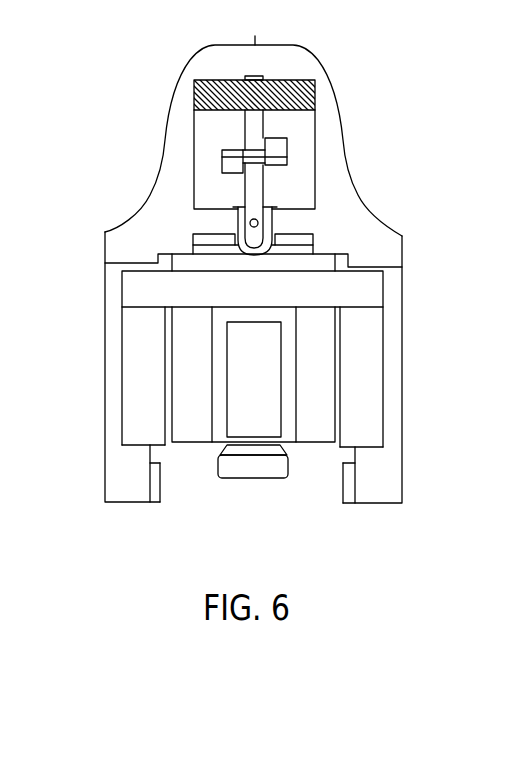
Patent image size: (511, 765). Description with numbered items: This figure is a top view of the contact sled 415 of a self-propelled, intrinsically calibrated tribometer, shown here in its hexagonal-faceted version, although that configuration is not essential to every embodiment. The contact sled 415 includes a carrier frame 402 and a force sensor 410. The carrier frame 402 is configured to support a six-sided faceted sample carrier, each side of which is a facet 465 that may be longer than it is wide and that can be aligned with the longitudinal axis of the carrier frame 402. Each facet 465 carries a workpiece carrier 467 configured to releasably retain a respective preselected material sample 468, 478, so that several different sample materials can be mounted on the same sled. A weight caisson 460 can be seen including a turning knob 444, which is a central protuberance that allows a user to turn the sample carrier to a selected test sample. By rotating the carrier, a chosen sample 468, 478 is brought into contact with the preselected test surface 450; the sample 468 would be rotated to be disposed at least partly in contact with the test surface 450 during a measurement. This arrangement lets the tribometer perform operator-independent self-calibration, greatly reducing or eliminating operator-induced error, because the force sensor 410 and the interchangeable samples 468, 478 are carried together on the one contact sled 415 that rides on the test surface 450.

The carrier frame 402 is at (402, 373).
The force sensor 410 is at (228, 158).
The contact sled 415 is at (362, 447).
The turning knob 444 is at (254, 490).
The test surface 450 is at (487, 440).
The weight caisson 460 is at (288, 446).
The facet 465 is at (218, 441).
The workpiece carrier 467 is at (263, 318).
The preselected material sample 468 is at (268, 391).
The preselected material sample 478 is at (330, 391).